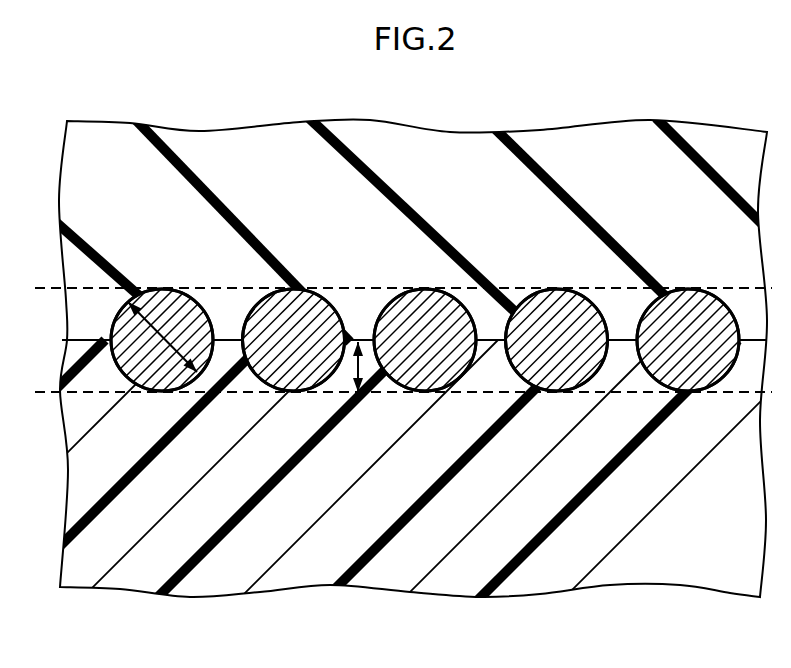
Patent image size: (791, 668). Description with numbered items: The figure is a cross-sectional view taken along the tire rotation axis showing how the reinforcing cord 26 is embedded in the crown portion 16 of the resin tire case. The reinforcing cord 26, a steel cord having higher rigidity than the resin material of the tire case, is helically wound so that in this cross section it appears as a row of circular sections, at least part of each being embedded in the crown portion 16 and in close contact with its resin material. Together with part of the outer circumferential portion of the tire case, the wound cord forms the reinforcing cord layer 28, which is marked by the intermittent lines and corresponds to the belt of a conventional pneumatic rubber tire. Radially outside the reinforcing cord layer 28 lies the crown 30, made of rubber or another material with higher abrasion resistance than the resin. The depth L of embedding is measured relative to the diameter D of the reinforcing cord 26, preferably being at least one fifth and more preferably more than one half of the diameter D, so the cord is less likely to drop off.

The crown portion 16 is at (542, 565).
The reinforcing cord 26 is at (195, 292).
The reinforcing cord layer 28 is at (377, 288).
The crown 30 is at (626, 150).
The diameter of the reinforcing cord D is at (152, 343).
The depth of embedding L is at (355, 367).